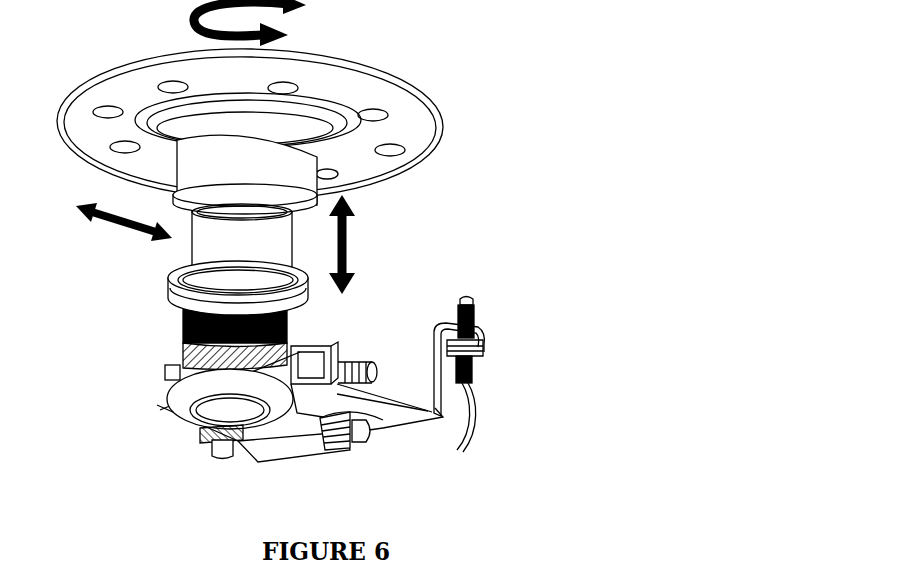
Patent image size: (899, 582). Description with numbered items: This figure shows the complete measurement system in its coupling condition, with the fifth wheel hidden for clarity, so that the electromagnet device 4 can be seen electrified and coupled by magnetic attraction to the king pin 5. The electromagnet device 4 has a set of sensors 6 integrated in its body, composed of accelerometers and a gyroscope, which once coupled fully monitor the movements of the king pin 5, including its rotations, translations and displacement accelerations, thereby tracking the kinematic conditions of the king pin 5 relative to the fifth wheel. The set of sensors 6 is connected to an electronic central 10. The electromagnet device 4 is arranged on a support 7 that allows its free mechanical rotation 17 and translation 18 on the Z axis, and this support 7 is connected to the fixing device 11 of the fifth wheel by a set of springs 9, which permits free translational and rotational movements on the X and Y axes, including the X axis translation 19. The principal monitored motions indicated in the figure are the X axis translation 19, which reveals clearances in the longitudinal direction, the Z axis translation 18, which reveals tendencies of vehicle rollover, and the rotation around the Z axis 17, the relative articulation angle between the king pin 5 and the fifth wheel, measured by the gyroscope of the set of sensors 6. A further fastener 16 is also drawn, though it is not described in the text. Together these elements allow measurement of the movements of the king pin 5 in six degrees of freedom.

The electromagnet device 4 is at (183, 317).
The king pin 5 is at (247, 170).
The set of sensors 6 is at (183, 360).
The support 7 is at (180, 412).
The set of springs 9 is at (337, 353).
The electronic central 10 is at (260, 455).
The fixing device 11 is at (387, 432).
The adjustment bolt 16 is at (467, 360).
The rotation around Z axis (RZ) 17 is at (307, 15).
The Z axis translation (TZ) 18 is at (350, 268).
The X axis translation (TX) 19 is at (120, 228).